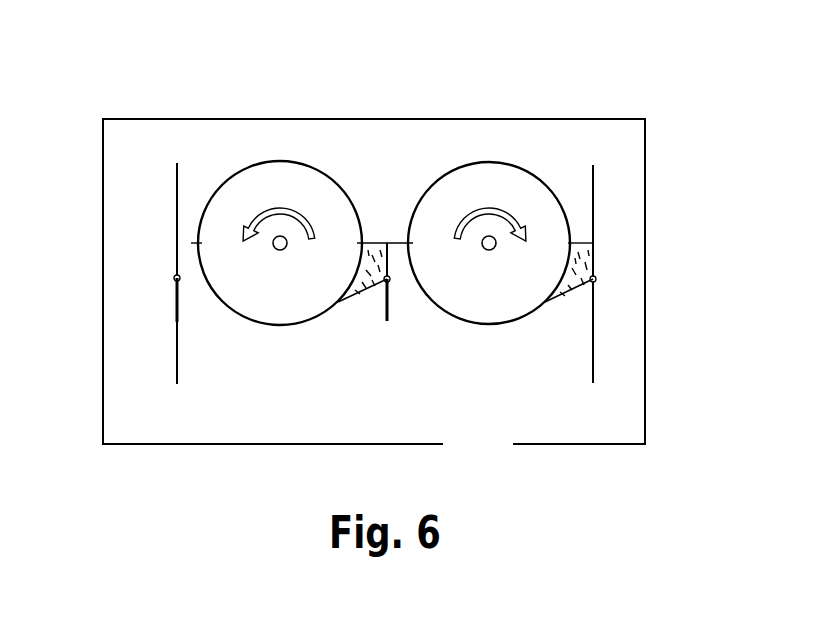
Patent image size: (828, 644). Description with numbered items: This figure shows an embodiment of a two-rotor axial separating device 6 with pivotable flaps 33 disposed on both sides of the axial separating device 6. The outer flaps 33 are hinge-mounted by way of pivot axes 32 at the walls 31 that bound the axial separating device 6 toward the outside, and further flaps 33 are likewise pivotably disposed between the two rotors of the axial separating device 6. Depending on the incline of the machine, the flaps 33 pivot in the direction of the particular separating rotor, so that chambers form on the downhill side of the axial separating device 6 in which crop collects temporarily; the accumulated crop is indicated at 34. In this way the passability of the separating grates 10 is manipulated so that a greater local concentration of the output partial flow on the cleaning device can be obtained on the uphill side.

The axial separating device 6 is at (447, 165).
The separating grate 10 is at (240, 168).
The wall 31 is at (177, 360).
The pivot axis 32 is at (176, 278).
The flap 33 is at (180, 312).
The deposit 34 is at (364, 262).